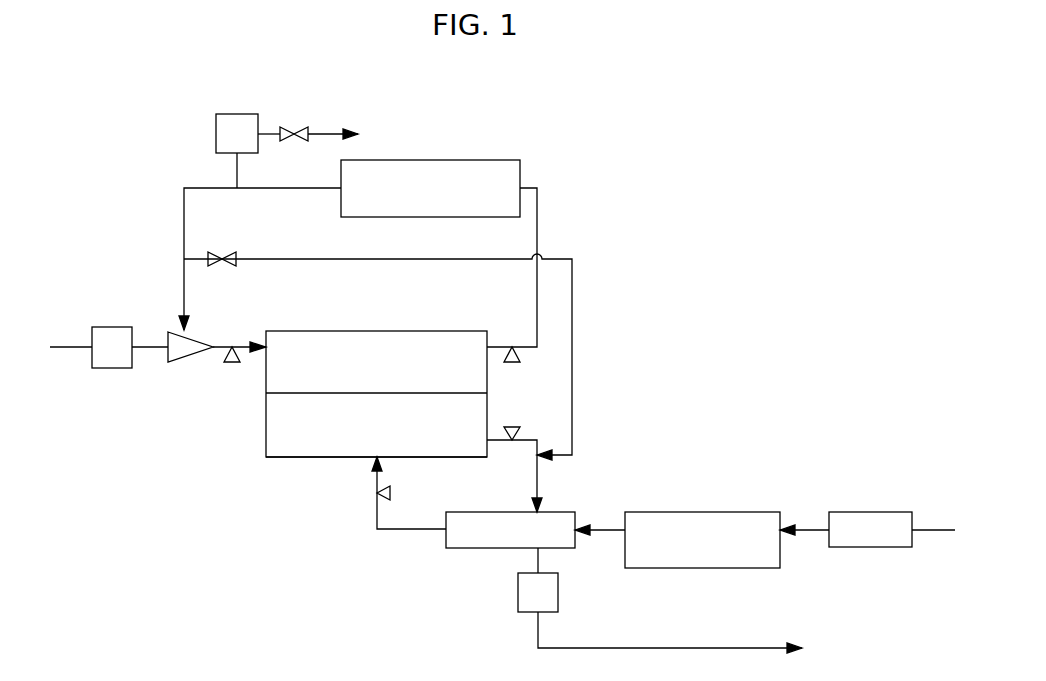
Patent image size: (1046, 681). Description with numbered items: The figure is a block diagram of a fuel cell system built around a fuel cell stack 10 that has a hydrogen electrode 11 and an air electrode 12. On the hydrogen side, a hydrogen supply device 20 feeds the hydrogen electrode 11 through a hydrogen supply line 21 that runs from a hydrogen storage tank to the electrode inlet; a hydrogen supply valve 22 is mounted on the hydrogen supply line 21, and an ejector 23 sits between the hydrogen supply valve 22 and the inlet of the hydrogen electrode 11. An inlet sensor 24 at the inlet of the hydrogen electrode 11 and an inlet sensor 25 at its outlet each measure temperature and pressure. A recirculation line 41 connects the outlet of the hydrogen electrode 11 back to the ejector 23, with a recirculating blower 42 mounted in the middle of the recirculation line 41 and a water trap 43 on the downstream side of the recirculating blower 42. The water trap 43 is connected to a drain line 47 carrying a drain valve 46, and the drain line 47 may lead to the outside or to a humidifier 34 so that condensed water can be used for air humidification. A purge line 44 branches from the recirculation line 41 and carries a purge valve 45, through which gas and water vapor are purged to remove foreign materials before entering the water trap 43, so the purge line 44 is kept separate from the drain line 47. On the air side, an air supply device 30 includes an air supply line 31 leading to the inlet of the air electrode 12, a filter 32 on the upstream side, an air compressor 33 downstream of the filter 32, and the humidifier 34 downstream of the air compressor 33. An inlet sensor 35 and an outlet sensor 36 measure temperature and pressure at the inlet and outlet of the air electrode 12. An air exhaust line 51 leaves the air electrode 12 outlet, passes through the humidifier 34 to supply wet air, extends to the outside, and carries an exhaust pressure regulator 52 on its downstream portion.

The fuel cell stack 10 is at (248, 461).
The hydrogen electrode 11 is at (273, 380).
The air electrode 12 is at (273, 425).
The hydrogen supply device 20 is at (76, 372).
The hydrogen supply line 21 is at (78, 345).
The hydrogen supply valve 22 is at (115, 327).
The ejector 23 is at (198, 340).
The inlet sensor 24 is at (228, 362).
The inlet sensor 25 is at (512, 362).
The air supply device 30 is at (800, 490).
The air supply line 31 is at (932, 530).
The filter 32 is at (878, 512).
The air compressor 33 is at (680, 512).
The humidifier 34 is at (513, 512).
The inlet sensor 35 is at (390, 493).
The outlet sensor 36 is at (515, 427).
The recirculation line 41 is at (287, 190).
The recirculating blower 42 is at (452, 160).
The water trap 43 is at (216, 127).
The purge line 44 is at (340, 258).
The purge valve 45 is at (215, 253).
The drain valve 46 is at (288, 126).
The drain line 47 is at (322, 132).
The air exhaust line 51 is at (540, 481).
The exhaust pressure regulator 52 is at (518, 590).